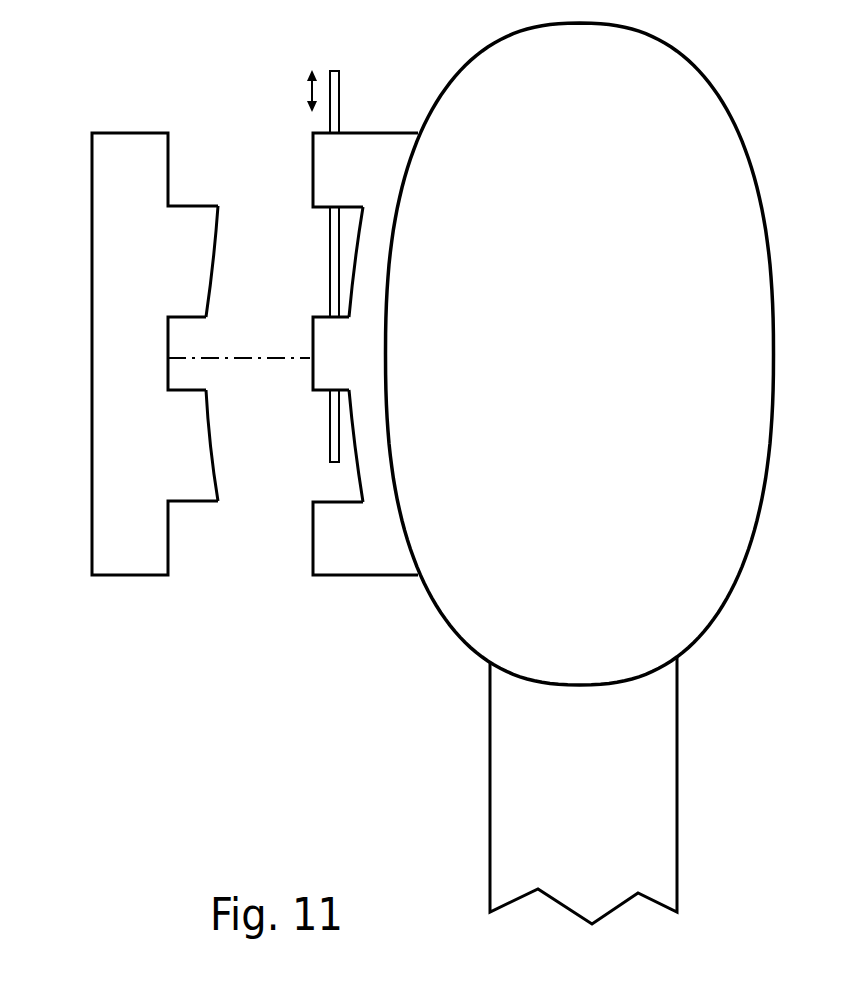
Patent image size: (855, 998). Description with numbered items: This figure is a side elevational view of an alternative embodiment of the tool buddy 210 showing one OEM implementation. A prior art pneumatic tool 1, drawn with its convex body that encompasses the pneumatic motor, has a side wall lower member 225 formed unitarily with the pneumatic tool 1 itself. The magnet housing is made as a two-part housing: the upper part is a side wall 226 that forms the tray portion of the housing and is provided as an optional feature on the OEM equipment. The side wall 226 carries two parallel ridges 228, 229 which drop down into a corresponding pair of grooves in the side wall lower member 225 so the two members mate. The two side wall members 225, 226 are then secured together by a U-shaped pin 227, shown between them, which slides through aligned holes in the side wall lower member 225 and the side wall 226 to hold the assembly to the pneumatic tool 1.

The pneumatic tool 1 is at (589, 348).
The second alternative embodiment tool buddy 210 is at (226, 306).
The side wall lower member 225 is at (384, 549).
The side wall 226 is at (169, 262).
The U-shaped pin 227 is at (339, 93).
The ridge 228 is at (219, 497).
The ridge 229 is at (219, 215).